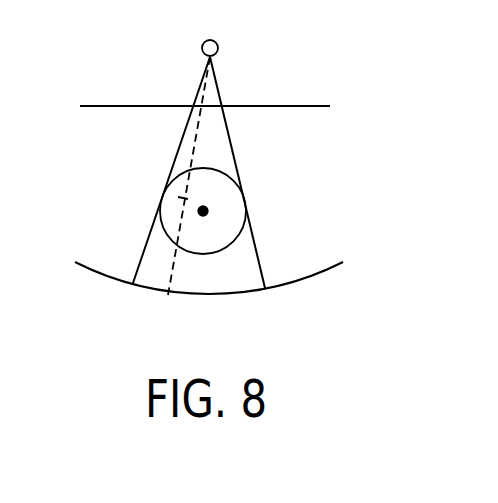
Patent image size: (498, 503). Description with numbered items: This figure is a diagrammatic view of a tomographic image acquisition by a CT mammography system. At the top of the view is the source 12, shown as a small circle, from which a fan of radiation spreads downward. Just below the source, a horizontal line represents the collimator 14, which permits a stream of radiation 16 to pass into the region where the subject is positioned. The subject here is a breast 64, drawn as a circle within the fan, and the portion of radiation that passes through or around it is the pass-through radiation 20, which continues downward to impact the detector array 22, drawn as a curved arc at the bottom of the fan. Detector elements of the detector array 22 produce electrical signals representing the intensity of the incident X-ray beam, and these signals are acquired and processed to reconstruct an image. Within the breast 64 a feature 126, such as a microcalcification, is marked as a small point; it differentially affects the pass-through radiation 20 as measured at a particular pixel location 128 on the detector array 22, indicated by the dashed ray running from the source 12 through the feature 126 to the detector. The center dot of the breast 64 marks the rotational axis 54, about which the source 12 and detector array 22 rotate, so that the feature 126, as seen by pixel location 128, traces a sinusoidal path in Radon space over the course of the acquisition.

The source 12 is at (216, 42).
The collimator 14 is at (100, 105).
The stream of radiation 16 is at (230, 138).
The pass-through radiation 20 is at (260, 262).
The detector array 22 is at (308, 280).
The rotational axis 54 is at (208, 210).
The breast 64 is at (236, 170).
The feature 126 is at (183, 198).
The pixel location 128 is at (167, 293).